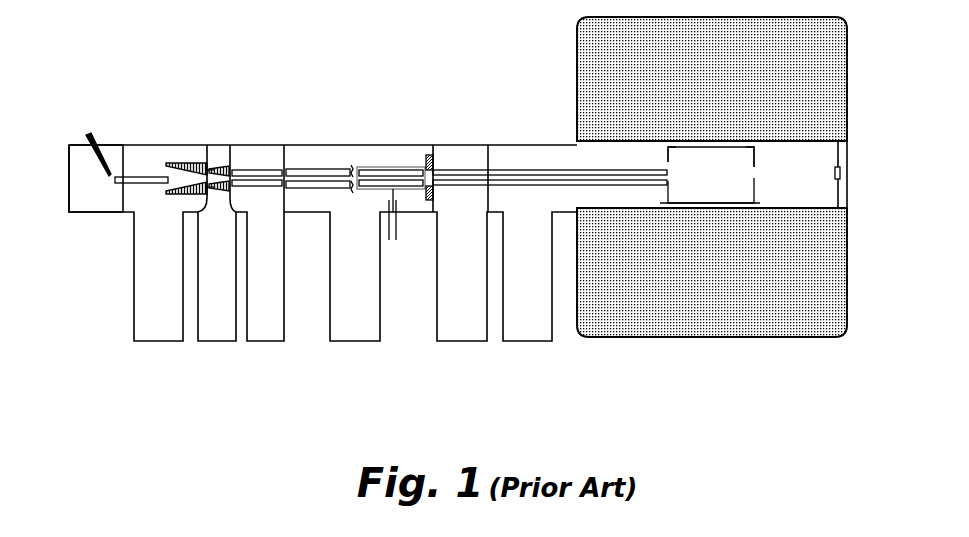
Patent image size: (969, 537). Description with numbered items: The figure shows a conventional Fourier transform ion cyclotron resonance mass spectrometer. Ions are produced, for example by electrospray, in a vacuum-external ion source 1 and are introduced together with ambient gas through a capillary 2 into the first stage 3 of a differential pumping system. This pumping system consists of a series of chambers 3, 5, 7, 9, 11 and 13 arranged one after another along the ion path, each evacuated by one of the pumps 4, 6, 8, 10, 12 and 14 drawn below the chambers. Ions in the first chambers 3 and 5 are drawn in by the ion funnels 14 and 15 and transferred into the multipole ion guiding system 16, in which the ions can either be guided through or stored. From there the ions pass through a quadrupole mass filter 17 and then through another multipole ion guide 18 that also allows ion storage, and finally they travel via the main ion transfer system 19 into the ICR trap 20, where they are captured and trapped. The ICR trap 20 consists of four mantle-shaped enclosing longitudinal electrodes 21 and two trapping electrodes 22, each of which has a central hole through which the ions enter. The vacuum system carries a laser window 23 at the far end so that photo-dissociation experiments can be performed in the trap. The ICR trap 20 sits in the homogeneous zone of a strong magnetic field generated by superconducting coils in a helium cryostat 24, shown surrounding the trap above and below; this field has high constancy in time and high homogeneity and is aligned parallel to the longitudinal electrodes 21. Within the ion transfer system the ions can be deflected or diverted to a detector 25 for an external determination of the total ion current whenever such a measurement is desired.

The vacuum-external ion source 1 is at (96, 178).
The capillary 2 is at (134, 172).
The first stage 3 is at (176, 182).
The pump 4 is at (158, 276).
The chamber 5 is at (218, 192).
The pump 6 is at (217, 276).
The chamber 7 is at (256, 181).
The pump 8 is at (265, 276).
The chamber 9 is at (354, 192).
The pump 10 is at (355, 276).
The chamber 11 is at (454, 180).
The pump 12 is at (462, 276).
The chamber 13 is at (515, 180).
The pump / ion funnel 14 is at (189, 160).
The ion funnel 15 is at (217, 165).
The multipole ion guiding system 16 is at (258, 167).
The quadrupole mass filter 17 is at (319, 167).
The multipole ion guide 18 is at (373, 167).
The main ion transfer system 19 is at (512, 165).
The ICR trap 20 is at (711, 175).
The longitudinal electrodes 21 is at (684, 205).
The trapping electrodes 22 is at (664, 154).
The laser window 23 is at (842, 172).
The helium cryostat 24 is at (712, 177).
The detector 25 is at (428, 156).